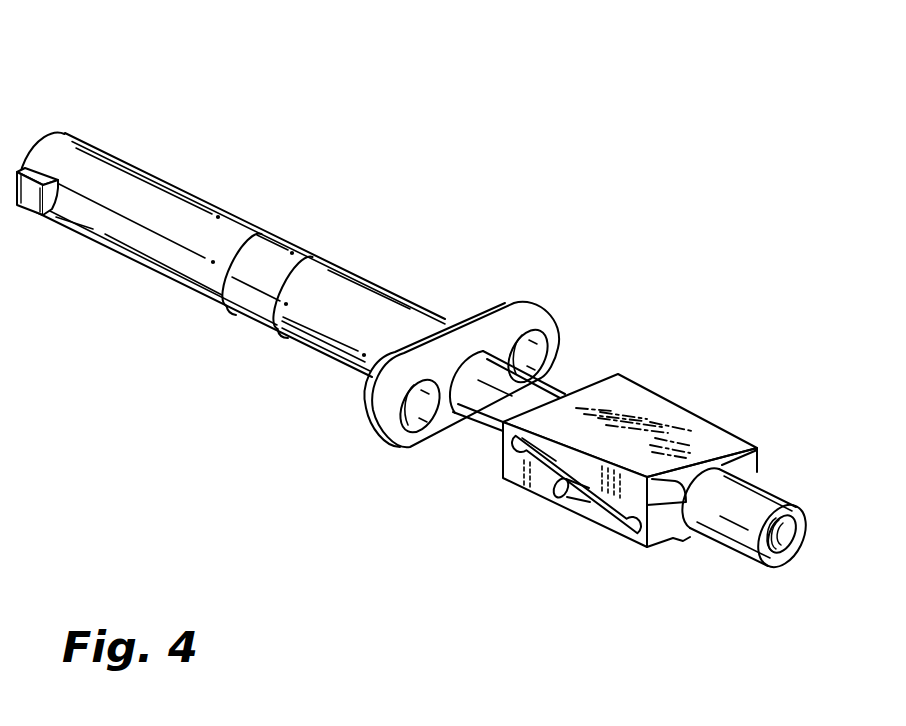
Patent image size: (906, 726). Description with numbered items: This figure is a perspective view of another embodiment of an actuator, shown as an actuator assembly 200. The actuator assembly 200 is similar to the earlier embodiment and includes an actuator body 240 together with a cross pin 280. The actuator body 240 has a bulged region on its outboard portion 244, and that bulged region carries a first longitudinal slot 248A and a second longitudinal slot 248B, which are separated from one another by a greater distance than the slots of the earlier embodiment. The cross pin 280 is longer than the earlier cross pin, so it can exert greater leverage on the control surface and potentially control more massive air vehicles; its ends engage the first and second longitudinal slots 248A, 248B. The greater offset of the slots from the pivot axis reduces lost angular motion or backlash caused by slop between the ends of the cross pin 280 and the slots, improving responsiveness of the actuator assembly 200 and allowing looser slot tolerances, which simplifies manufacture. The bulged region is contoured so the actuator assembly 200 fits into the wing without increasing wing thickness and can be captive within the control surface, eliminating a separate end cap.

The actuator assembly 200 is at (502, 118).
The actuator body 240 is at (596, 362).
The outboard portion 244 is at (628, 557).
The first longitudinal slot 248A is at (530, 452).
The second longitudinal slot 248B is at (670, 397).
The cross pin 280 is at (562, 492).